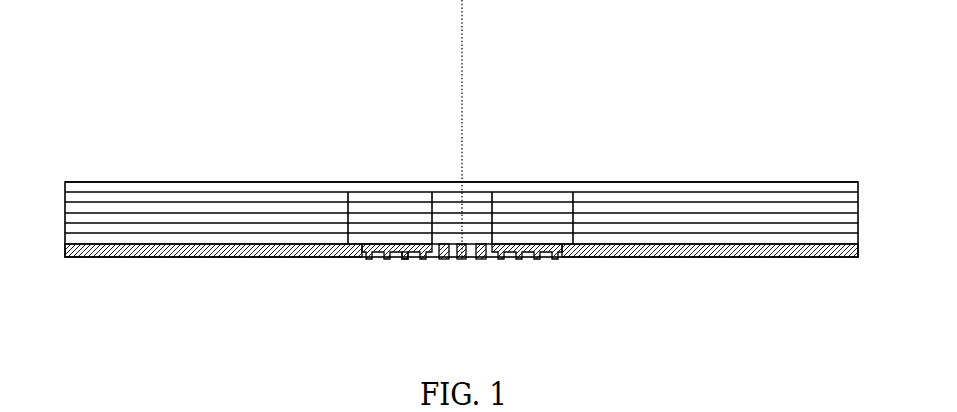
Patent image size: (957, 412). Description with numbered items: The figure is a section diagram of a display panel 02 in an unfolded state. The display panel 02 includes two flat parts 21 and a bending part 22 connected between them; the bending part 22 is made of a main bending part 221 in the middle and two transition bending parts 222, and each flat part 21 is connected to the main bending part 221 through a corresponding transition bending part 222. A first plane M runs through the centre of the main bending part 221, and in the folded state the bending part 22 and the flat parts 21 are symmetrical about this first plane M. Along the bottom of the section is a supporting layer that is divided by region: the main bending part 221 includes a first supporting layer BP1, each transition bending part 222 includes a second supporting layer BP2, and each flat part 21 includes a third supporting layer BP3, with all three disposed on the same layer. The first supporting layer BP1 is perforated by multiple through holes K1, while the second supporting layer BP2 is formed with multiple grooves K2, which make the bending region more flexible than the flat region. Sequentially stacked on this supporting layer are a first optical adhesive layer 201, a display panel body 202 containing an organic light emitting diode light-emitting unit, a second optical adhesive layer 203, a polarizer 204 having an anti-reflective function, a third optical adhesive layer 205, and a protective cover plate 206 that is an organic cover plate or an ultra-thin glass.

The display panel 02 is at (98, 262).
The flat part 21 is at (65, 168).
The bending part 22 is at (533, 128).
The main bending part 221 is at (457, 180).
The transition bending part 222 is at (402, 180).
The first optical adhesive layer 201 is at (725, 238).
The display panel body 202 is at (760, 230).
The second optical adhesive layer 203 is at (793, 220).
The polarizer 204 is at (823, 208).
The third optical adhesive layer 205 is at (313, 198).
The protective cover plate 206 is at (257, 185).
The first supporting layer BP1 is at (481, 256).
The second supporting layer BP2 is at (363, 252).
The third supporting layer BP3 is at (182, 253).
The through hole K1 is at (451, 256).
The groove K2 is at (404, 259).
The first plane M is at (463, 23).